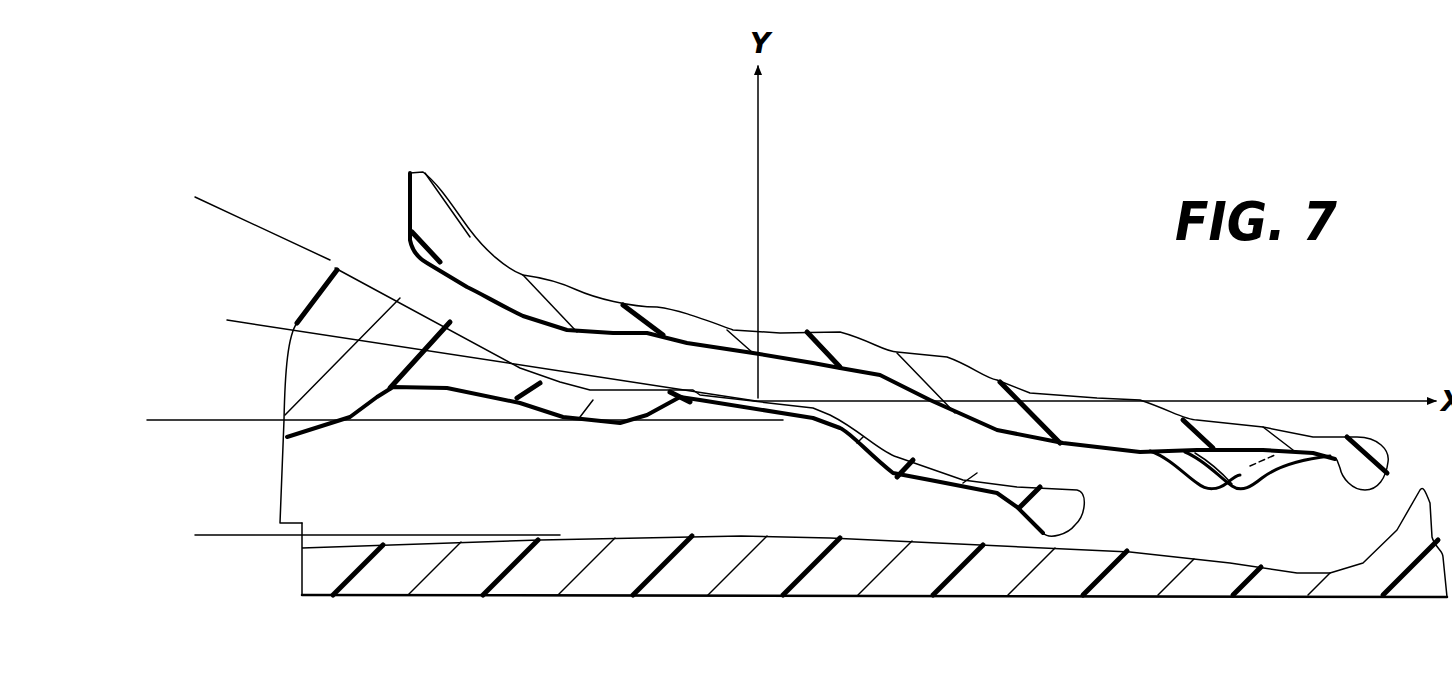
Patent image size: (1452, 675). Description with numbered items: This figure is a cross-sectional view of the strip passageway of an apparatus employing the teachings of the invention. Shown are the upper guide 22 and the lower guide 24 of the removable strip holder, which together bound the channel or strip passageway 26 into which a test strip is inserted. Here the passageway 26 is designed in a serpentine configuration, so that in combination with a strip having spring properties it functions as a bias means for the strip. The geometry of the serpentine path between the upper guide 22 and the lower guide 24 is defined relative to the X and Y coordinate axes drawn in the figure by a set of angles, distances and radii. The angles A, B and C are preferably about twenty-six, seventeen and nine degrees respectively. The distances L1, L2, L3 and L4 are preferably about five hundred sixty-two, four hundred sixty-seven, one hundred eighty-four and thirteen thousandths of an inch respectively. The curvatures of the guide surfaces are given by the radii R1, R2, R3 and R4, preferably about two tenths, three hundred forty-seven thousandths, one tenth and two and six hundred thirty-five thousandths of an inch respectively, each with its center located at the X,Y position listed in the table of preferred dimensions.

The upper guide 22 is at (470, 240).
The lower guide 24 is at (288, 430).
The strip passageway 26 is at (430, 291).
The angle A is at (210, 208).
The angle B is at (285, 242).
The angle C is at (245, 322).
The distance L1 is at (335, 257).
The distance L2 is at (410, 173).
The distance L3 is at (323, 533).
The distance L4 is at (741, 535).
The radius R1 is at (569, 328).
The radius R2 is at (1001, 425).
The radius R3 is at (484, 347).
The radius R4 is at (736, 393).